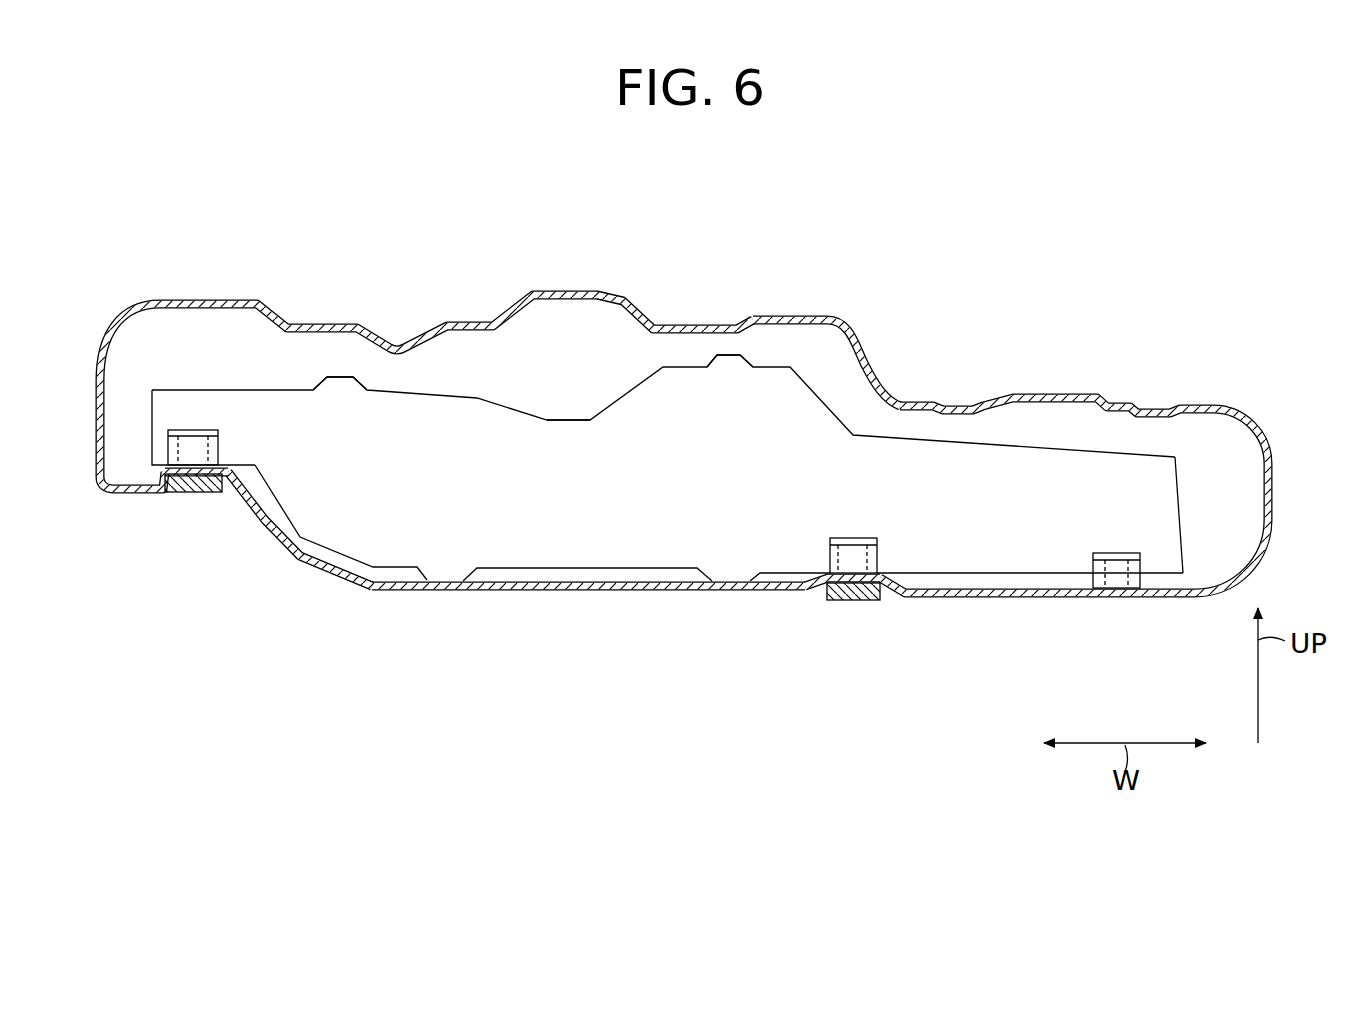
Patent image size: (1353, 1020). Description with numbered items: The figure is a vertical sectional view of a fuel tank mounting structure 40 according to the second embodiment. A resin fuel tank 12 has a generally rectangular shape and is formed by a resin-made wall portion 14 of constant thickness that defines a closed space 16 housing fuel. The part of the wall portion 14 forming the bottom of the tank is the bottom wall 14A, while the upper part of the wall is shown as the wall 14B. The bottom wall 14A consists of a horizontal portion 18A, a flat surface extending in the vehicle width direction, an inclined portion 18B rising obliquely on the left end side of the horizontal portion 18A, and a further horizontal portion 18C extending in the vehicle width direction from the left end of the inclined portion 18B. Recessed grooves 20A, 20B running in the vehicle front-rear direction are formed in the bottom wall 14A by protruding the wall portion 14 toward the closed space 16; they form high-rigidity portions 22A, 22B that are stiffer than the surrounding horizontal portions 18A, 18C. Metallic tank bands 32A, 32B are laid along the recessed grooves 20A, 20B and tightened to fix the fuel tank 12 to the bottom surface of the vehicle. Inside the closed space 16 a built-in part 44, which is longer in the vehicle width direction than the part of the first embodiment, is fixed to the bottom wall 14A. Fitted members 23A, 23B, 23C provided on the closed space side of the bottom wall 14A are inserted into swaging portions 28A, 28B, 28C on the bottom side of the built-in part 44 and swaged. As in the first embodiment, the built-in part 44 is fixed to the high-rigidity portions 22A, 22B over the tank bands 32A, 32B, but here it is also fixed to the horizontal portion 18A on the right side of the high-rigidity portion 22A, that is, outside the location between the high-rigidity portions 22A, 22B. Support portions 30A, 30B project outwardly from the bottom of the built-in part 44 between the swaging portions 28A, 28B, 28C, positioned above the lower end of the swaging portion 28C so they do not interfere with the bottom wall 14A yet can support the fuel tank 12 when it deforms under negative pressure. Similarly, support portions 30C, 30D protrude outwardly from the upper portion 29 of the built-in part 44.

The resin fuel tank 12 is at (1050, 390).
The wall portion 14 is at (1197, 404).
The bottom wall 14A is at (992, 598).
The upper wall portion 14B is at (828, 314).
The closed space 16 is at (1238, 506).
The horizontal portion 18A is at (626, 594).
The inclined portion 18B is at (265, 530).
The horizontal portion 18C is at (108, 493).
The recessed groove 20A is at (825, 585).
The recessed groove 20B is at (163, 478).
The high-rigidity portion 22A is at (855, 538).
The high-rigidity portion 22B is at (197, 430).
The fitted member 23A is at (870, 556).
The fitted member 23B is at (218, 452).
The fitted member 23C is at (1138, 568).
The swaging portion 28A is at (828, 556).
The swaging portion 28B is at (166, 452).
The swaging portion 28C is at (1092, 568).
The upper portion 29 is at (490, 400).
The support portion 30A is at (730, 588).
The support portion 30B is at (438, 590).
The support portion 30C is at (717, 355).
The support portion 30D is at (340, 377).
The tank band 32A is at (852, 600).
The tank band 32B is at (195, 492).
The fuel tank mounting structure 40 is at (1037, 252).
The built-in part 44 is at (577, 416).